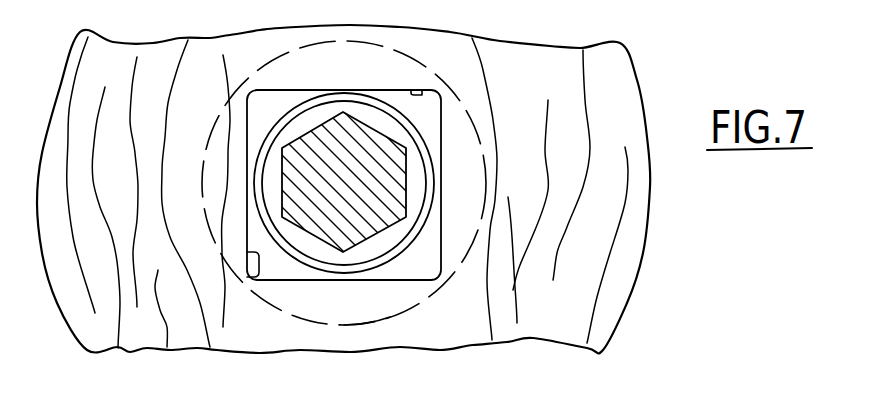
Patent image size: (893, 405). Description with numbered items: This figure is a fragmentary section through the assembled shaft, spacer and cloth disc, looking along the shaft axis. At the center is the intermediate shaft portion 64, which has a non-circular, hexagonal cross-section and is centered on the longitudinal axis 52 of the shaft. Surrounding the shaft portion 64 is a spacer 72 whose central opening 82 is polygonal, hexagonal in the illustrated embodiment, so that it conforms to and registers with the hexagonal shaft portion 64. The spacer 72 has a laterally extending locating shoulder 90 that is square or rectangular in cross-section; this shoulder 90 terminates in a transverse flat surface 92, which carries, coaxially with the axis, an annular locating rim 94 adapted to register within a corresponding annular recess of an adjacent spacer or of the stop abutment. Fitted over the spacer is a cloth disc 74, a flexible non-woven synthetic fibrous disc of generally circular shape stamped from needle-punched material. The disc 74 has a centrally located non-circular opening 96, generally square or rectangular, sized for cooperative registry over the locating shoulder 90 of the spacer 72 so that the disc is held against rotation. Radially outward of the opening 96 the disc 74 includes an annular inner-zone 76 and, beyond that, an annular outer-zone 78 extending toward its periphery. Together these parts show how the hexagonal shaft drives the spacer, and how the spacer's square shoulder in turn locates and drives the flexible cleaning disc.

The longitudinal axis 52 is at (344, 183).
The intermediate shaft portion 64 is at (393, 152).
The spacer 72 is at (386, 46).
The cloth disc 74 is at (648, 75).
The annular inner-zone 76 is at (390, 310).
The annular outer-zone 78 is at (632, 263).
The central opening 82 is at (313, 232).
The locating shoulder 90 is at (248, 130).
The transverse flat surface 92 is at (410, 270).
The annular locating rim 94 is at (413, 235).
The central opening of disc 96 is at (427, 86).